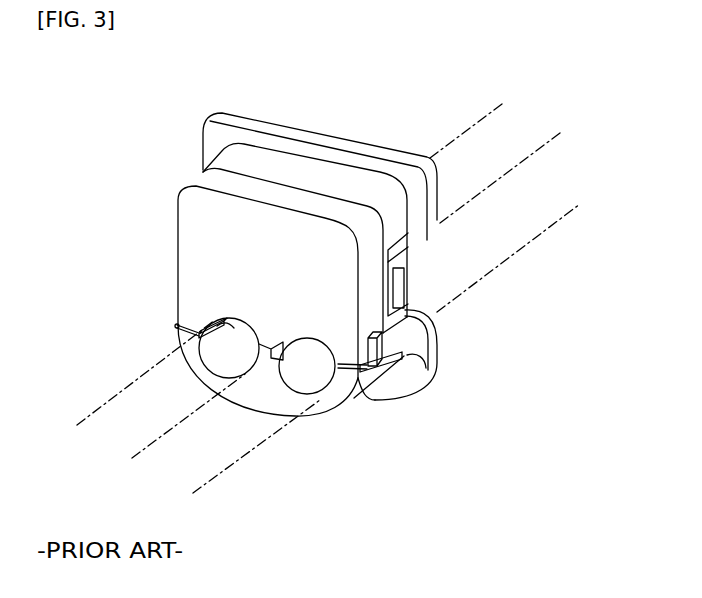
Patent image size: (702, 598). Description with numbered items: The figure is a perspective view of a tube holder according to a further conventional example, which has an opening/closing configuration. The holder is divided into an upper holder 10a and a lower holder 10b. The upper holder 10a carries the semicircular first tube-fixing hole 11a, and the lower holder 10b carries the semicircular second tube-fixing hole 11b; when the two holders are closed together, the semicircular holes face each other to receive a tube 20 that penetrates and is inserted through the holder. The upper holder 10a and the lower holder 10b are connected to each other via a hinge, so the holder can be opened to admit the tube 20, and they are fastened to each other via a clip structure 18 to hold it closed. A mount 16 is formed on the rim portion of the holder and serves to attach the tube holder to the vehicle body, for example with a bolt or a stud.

The mount 16 is at (303, 150).
The upper holder 10a is at (178, 243).
The lower holder 10b is at (371, 398).
The first tube-fixing hole 11a is at (216, 325).
The second tube-fixing hole 11b is at (298, 384).
The clip structure 18 is at (408, 360).
The tube 20 is at (102, 404).